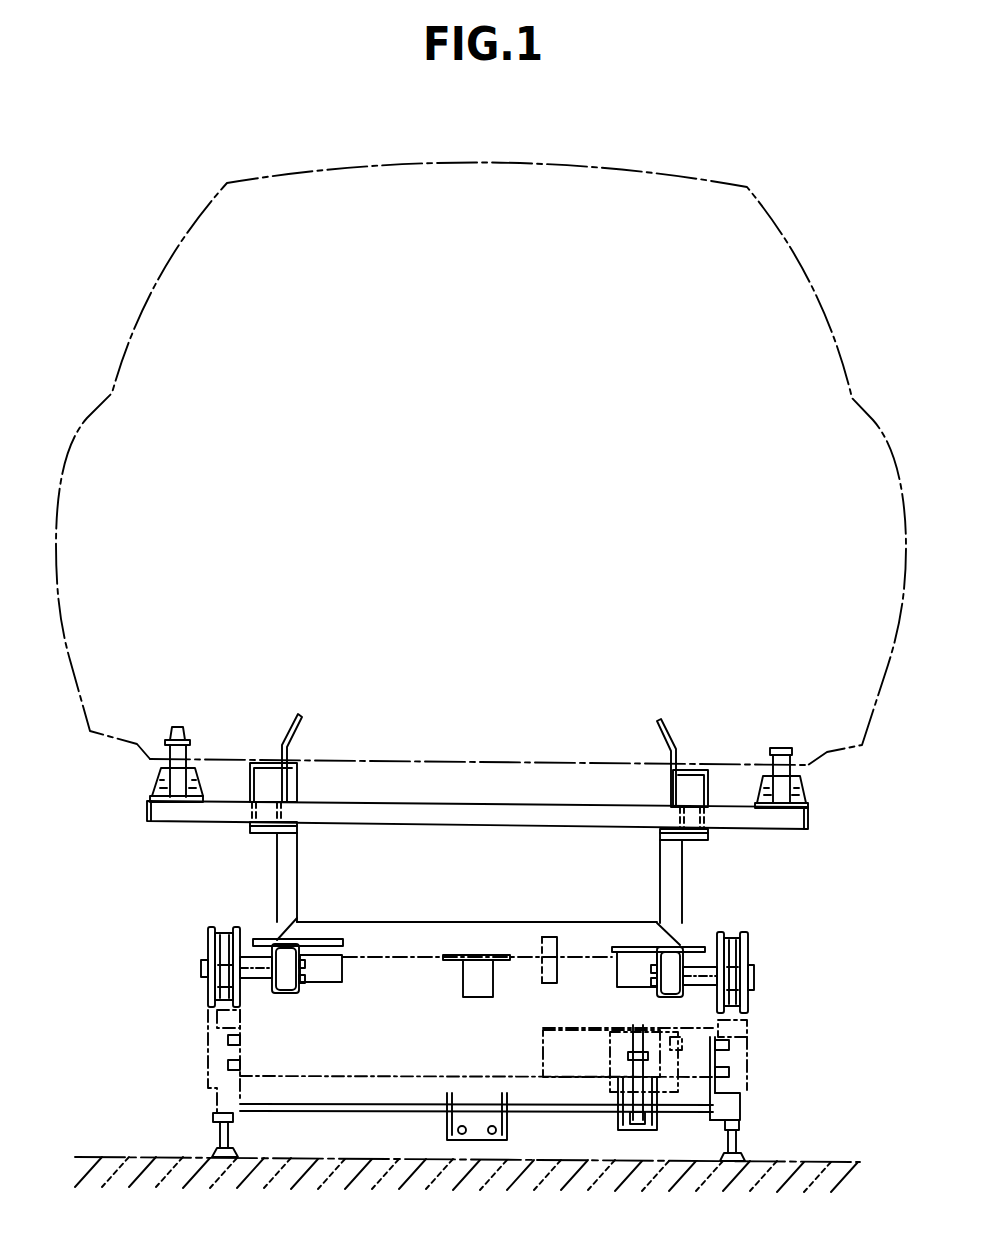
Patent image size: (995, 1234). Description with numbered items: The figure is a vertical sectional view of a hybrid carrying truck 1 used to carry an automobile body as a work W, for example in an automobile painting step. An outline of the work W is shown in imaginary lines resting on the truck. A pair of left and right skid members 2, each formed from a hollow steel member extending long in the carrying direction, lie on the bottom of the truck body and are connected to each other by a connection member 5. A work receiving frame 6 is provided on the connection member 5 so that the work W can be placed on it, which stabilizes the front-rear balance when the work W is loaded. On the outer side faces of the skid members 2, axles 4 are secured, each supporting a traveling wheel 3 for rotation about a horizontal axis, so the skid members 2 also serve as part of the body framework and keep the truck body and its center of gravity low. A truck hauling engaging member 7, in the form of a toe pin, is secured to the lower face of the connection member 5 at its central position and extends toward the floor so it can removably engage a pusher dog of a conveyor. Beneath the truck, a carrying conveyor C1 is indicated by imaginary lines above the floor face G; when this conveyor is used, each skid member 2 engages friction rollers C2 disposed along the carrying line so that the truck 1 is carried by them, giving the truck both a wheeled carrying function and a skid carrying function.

The work W is at (540, 163).
The hybrid carrying truck 1 is at (703, 856).
The skid member 2 is at (288, 982).
The traveling wheel 3 is at (225, 945).
The axle 4 is at (253, 973).
The connection member 5 is at (464, 942).
The work receiving frame 6 is at (790, 822).
The truck hauling engaging member 7 is at (475, 990).
The carrying conveyor C1 is at (762, 1063).
The friction roller C2 is at (670, 1022).
The floor face G is at (818, 1160).